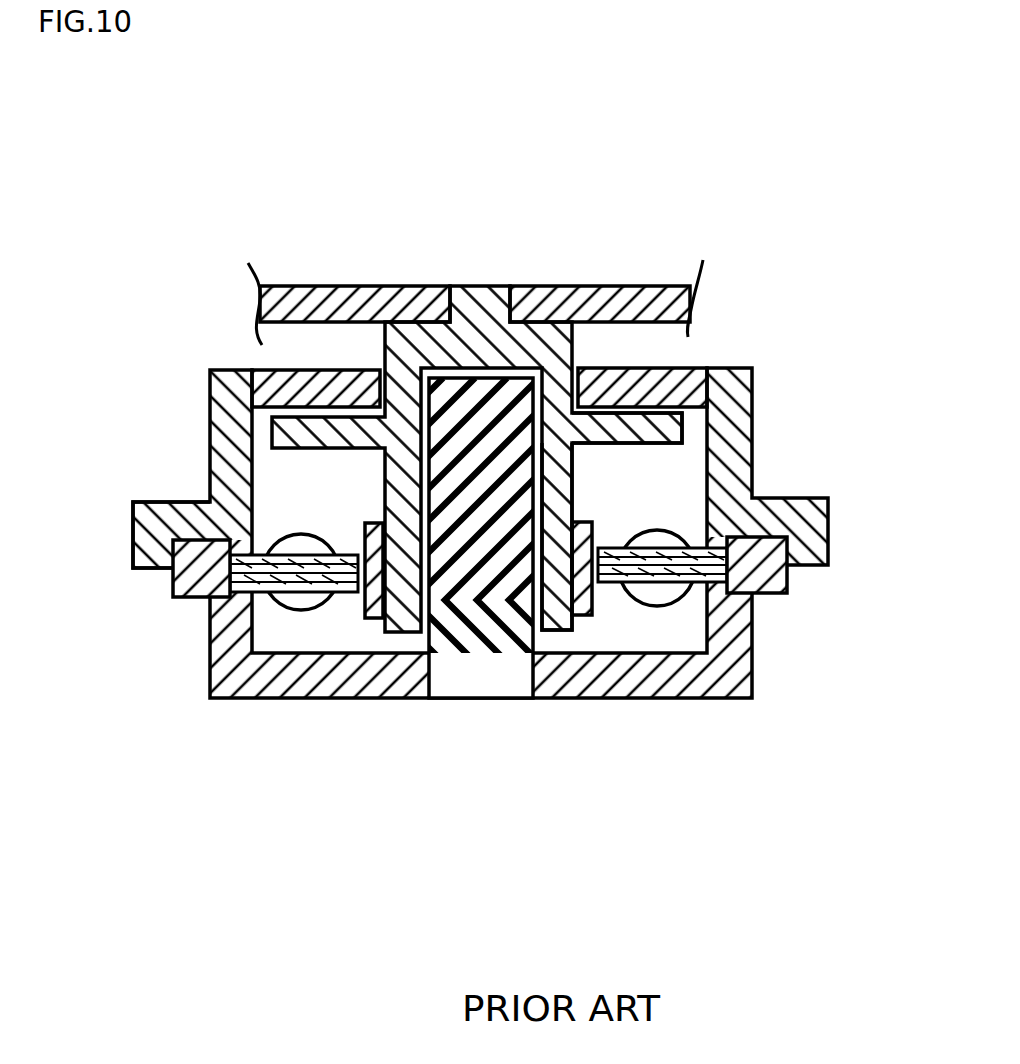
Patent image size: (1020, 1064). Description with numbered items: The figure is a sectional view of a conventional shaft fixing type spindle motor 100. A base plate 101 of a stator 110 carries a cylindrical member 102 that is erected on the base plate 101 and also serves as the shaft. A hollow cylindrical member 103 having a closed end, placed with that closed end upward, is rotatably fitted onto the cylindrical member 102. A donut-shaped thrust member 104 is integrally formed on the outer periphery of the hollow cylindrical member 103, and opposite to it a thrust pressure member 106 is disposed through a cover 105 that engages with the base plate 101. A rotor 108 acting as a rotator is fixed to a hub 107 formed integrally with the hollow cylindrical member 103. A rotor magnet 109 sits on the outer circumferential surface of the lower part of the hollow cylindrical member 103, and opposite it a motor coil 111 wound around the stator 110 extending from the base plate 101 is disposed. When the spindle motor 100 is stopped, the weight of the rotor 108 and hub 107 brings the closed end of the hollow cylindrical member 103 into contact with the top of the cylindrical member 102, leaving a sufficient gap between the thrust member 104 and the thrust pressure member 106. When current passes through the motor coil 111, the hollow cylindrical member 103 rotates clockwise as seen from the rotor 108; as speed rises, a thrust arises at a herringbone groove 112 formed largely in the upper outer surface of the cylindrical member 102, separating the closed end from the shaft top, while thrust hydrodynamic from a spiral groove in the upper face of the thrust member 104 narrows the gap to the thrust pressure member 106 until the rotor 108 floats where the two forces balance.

The spindle motor 100 is at (483, 529).
The base plate 101 is at (248, 673).
The cylindrical member 102 is at (480, 680).
The hollow cylindrical member 103 is at (555, 612).
The thrust member 104 is at (660, 430).
The cover 105 is at (158, 517).
The thrust pressure member 106 is at (672, 387).
The hub 107 is at (492, 300).
The rotor 108 is at (415, 303).
The rotor magnet 109 is at (585, 615).
The stator 110 is at (720, 580).
The motor coil 111 is at (665, 597).
The herringbone groove 112 is at (467, 431).